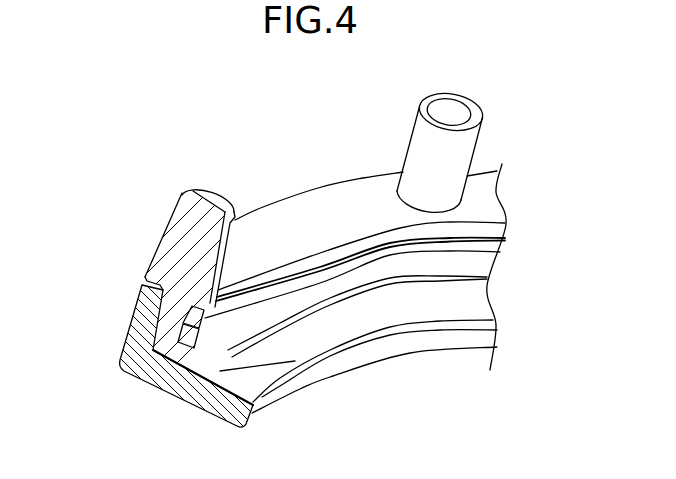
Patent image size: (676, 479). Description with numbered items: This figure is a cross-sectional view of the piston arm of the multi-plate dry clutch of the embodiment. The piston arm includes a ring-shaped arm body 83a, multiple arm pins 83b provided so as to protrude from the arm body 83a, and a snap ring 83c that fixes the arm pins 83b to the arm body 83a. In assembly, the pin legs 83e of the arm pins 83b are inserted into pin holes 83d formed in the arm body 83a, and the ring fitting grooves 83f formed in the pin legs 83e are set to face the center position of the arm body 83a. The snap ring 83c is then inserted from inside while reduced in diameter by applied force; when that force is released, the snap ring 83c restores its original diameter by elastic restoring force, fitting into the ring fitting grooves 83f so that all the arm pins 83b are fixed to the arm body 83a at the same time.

The arm body 83a is at (318, 188).
The arm pin 83b is at (172, 223).
The snap ring 83c is at (263, 375).
The pin hole 83d is at (152, 336).
The pin leg 83e is at (163, 352).
The ring fitting groove 83f is at (193, 312).